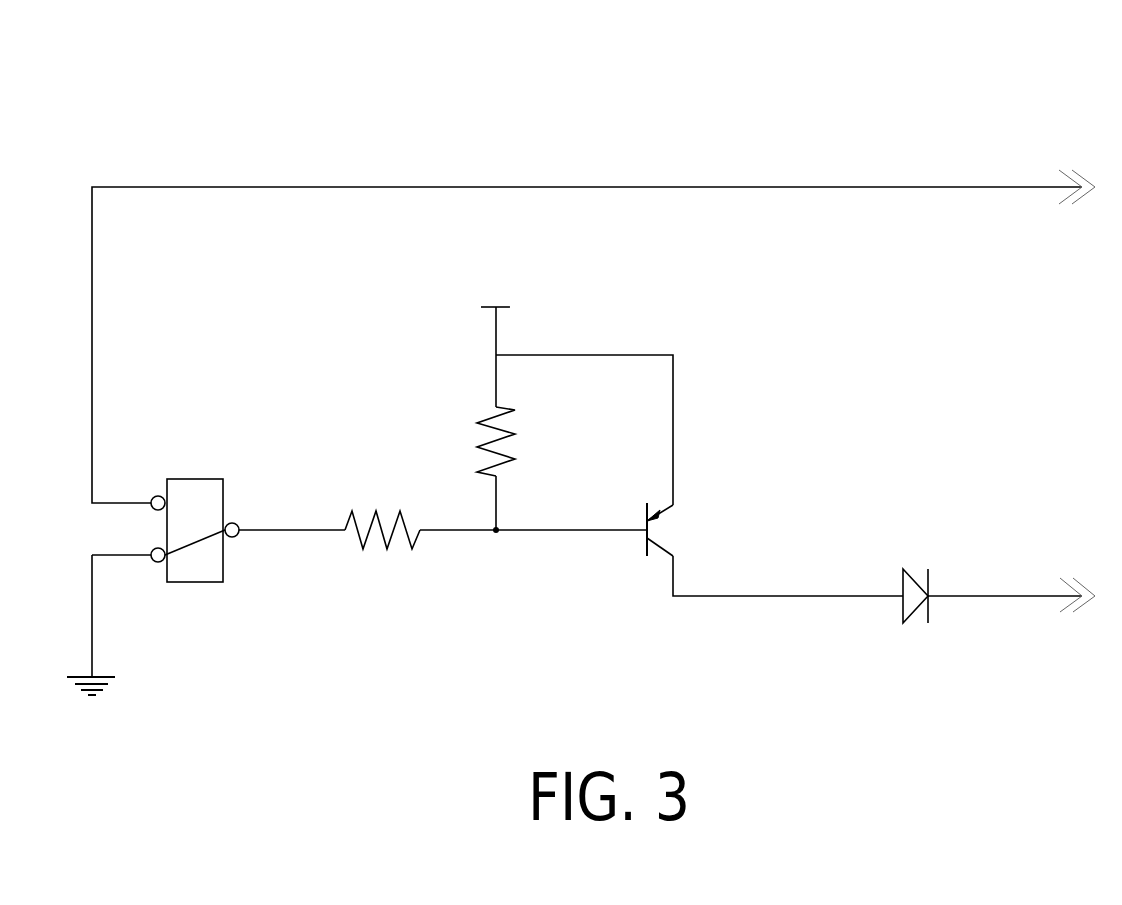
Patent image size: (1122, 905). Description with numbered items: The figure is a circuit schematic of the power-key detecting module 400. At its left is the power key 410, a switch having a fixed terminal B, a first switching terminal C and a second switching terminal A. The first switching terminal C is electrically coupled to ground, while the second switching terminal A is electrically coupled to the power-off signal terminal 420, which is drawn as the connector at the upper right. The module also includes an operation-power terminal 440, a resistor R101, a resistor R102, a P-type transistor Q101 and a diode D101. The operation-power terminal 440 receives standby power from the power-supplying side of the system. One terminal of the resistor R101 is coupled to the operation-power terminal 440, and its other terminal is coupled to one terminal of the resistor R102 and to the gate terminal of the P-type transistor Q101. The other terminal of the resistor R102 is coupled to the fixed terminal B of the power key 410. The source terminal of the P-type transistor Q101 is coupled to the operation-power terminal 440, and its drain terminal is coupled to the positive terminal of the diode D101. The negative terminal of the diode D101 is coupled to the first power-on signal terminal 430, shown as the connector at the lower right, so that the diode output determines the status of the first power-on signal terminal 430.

The power-key detecting module 400 is at (598, 56).
The power key 410 is at (197, 478).
The power-off signal terminal 420 is at (1085, 171).
The first power-on signal terminal 430 is at (1087, 580).
The operation-power terminal 440 is at (499, 305).
The resistor R101 is at (530, 441).
The resistor R102 is at (382, 510).
The P-type transistor Q101 is at (692, 529).
The diode D101 is at (912, 578).